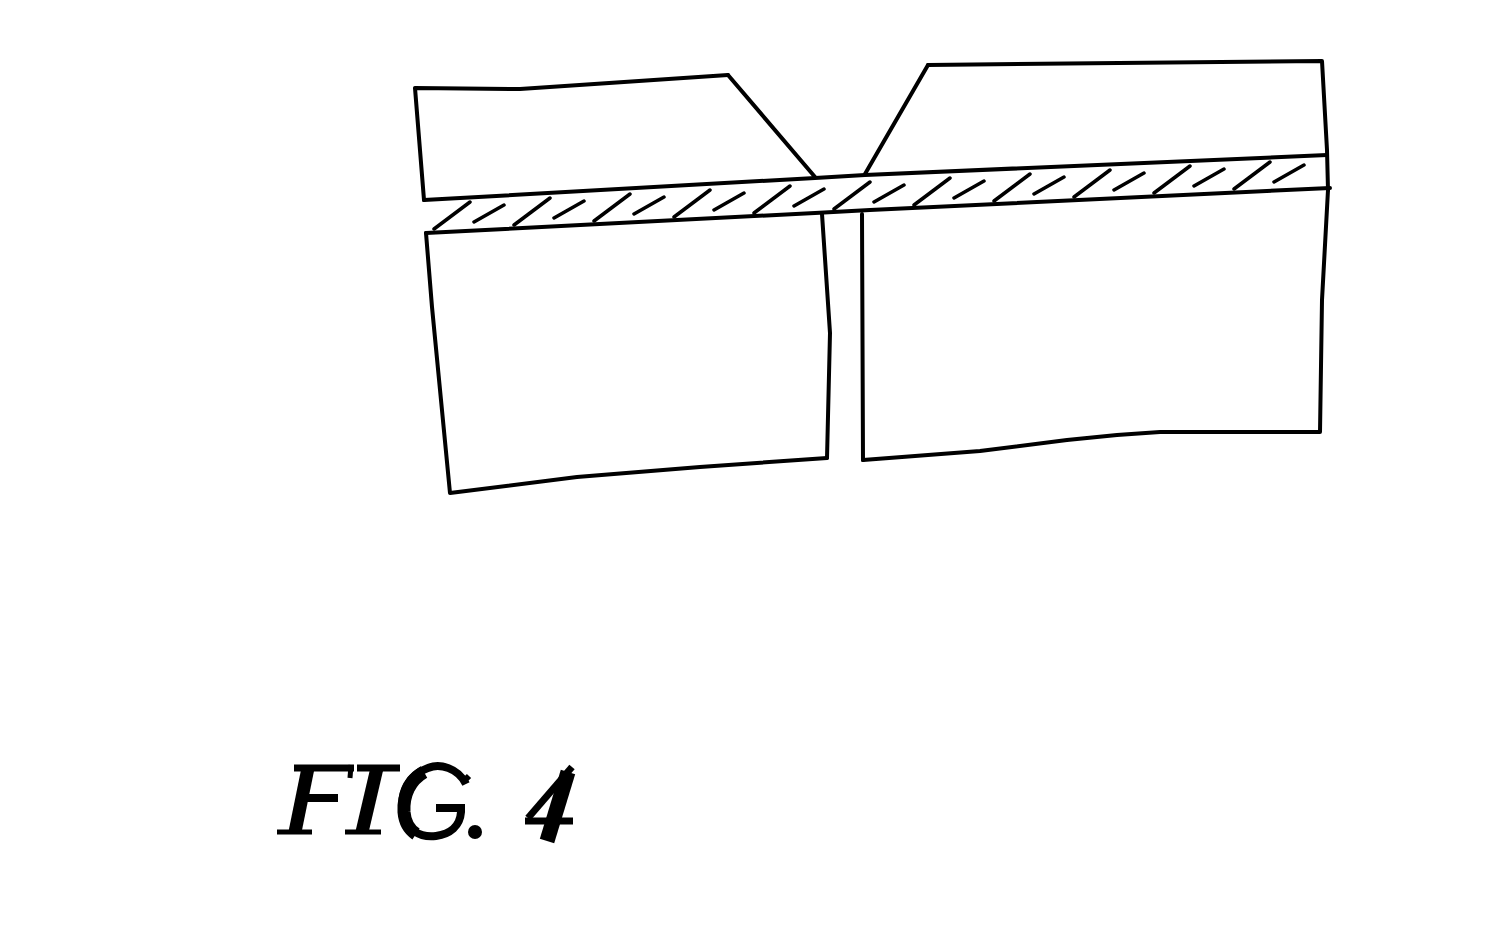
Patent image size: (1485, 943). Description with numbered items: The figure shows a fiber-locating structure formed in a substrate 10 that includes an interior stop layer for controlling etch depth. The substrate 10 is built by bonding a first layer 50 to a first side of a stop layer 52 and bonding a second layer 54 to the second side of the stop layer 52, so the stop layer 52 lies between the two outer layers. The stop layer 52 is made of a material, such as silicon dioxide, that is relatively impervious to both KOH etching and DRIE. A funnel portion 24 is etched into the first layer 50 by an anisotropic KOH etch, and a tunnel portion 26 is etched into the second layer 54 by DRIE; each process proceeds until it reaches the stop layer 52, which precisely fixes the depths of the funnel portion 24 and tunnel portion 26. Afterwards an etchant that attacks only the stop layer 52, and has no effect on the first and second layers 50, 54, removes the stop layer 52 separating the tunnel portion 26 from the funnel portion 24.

The substrate 10 is at (299, 266).
The funnel portion 24 is at (860, 90).
The tunnel portion 26 is at (849, 452).
The first layer 50 is at (1327, 100).
The stop layer 52 is at (1337, 170).
The second layer 54 is at (1325, 333).